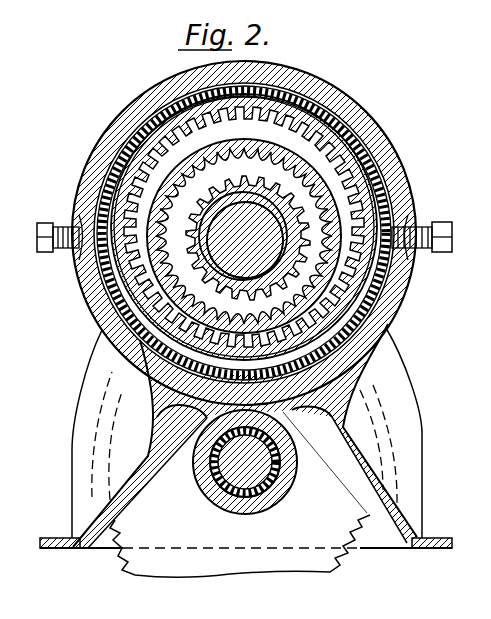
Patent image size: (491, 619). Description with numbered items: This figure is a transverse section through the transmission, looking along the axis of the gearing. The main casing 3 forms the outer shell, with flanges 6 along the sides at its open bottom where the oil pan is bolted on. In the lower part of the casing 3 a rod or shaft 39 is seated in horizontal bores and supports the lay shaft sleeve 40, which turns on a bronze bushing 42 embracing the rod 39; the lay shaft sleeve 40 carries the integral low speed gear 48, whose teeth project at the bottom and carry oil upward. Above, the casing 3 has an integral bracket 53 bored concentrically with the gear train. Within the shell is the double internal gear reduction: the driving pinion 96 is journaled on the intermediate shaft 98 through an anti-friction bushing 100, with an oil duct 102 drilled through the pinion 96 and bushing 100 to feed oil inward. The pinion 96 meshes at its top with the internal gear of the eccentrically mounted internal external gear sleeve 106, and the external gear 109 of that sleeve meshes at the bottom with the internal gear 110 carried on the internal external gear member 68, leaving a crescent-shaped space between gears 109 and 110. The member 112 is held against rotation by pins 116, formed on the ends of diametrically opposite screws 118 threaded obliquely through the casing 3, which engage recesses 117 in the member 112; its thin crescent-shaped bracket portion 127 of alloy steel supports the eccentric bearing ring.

The main casing 3 is at (380, 143).
The flanges 6 is at (62, 540).
The rod or shaft 39 is at (270, 495).
The lay shaft sleeve 40 is at (207, 480).
The bronze bushing 42 is at (222, 492).
The low speed gear 48 is at (330, 560).
The integral bracket 53 is at (310, 400).
The internal external gear member 68 is at (130, 153).
The driving pinion 96 is at (143, 277).
The intermediate shaft 98 is at (160, 293).
The bushing 100 is at (167, 313).
The oil duct or passageway 102 is at (290, 314).
The internal external gear sleeve 106 is at (385, 168).
The external gear 109 is at (317, 110).
The internal gear 110 is at (305, 88).
The member 112 is at (113, 167).
The pins 116 is at (68, 255).
The recesses 117 is at (84, 285).
The screws 118 is at (66, 218).
The crescent-shaped bracket portion 127 is at (193, 120).